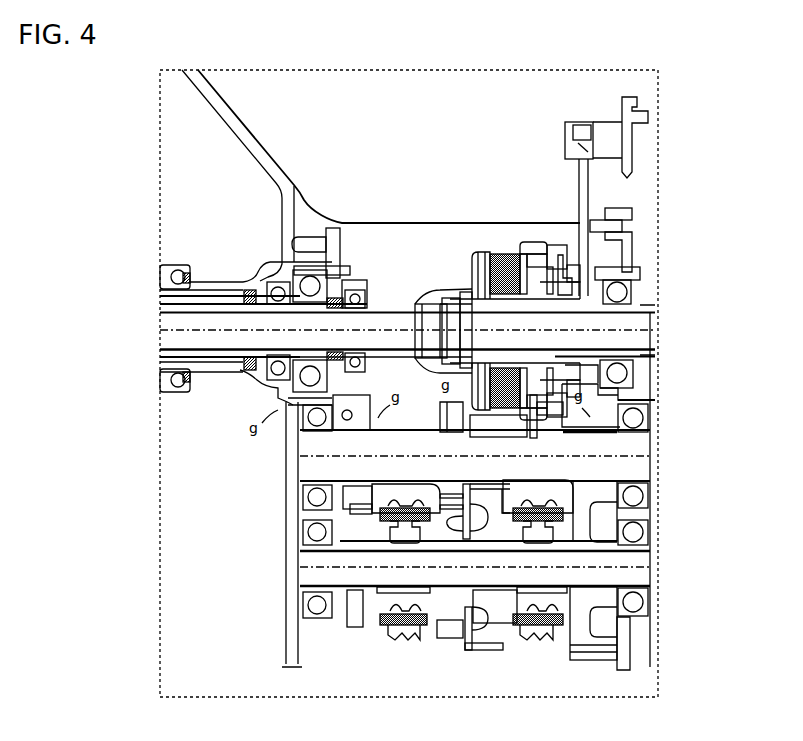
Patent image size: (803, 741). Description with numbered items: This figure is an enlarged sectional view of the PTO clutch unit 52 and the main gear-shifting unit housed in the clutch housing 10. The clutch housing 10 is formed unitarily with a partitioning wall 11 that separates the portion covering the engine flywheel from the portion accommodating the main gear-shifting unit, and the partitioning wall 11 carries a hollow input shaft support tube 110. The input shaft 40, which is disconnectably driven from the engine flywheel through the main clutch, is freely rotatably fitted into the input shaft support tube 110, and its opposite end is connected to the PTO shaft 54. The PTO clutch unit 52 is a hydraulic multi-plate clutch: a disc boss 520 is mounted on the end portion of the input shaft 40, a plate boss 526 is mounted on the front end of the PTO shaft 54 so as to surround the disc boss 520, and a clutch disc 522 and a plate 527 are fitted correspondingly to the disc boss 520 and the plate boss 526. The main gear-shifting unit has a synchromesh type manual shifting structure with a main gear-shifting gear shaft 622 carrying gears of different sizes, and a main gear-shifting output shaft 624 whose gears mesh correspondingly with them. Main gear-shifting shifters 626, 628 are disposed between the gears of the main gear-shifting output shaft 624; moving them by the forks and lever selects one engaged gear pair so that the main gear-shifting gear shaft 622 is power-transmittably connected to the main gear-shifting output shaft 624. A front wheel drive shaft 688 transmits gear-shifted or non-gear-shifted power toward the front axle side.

The clutch housing 10 is at (250, 123).
The partitioning wall 11 is at (290, 223).
The input shaft 40 is at (170, 344).
The PTO clutch unit 52 is at (563, 158).
The PTO shaft 54 is at (648, 324).
The input shaft support tube 110 is at (210, 372).
The disc boss 520 is at (447, 300).
The clutch disc 522 is at (478, 288).
The plate boss 526 is at (515, 262).
The plate 527 is at (497, 278).
The main gear-shifting gear shaft 622 is at (293, 465).
The main gear-shifting output shaft 624 is at (295, 570).
The main gear-shifting shifter 626 is at (418, 641).
The main gear-shifting shifter 628 is at (552, 641).
The front wheel drive shaft 688 is at (365, 390).